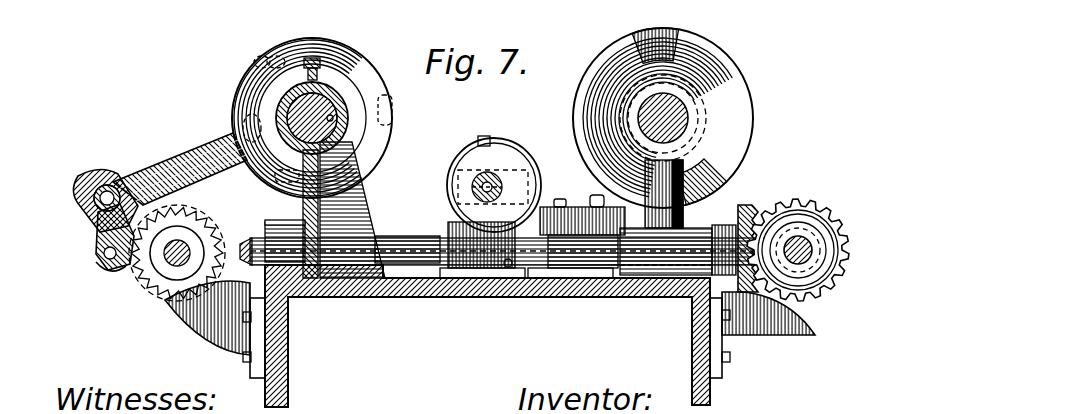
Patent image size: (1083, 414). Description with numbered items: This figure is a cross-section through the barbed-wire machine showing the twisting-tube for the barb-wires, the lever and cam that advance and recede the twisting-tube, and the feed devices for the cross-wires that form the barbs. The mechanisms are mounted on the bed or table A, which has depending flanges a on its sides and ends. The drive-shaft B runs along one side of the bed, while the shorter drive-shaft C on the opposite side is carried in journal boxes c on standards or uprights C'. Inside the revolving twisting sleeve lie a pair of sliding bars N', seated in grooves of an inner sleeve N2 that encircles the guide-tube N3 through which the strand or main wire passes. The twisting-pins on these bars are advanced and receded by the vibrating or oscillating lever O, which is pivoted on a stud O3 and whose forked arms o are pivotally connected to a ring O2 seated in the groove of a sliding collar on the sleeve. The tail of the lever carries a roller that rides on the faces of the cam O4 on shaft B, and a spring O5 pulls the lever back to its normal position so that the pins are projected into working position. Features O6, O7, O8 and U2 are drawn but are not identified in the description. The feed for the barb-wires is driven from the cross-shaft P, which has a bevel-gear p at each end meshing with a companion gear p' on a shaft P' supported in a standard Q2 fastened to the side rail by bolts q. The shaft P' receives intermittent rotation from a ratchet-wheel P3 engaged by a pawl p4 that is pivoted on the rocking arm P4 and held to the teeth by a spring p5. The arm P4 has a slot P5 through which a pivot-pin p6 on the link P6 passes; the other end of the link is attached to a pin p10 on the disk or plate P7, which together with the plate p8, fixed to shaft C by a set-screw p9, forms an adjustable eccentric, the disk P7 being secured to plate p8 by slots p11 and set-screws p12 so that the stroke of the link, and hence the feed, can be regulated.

The bed or table A is at (496, 268).
The depending flanges a is at (487, 376).
The drive-shaft B is at (670, 110).
The drive-shaft C is at (313, 110).
The journal bearings or boxes c is at (345, 108).
The standards or uprights C' is at (351, 210).
The cross-shaft P is at (407, 234).
The shaft P' is at (149, 279).
The ratchet-wheel P3 is at (186, 292).
The rocking arm P4 is at (108, 224).
The slot P5 is at (106, 186).
The link P6 is at (135, 180).
The disk or plate P7 is at (240, 92).
The bevel-gear p is at (746, 227).
The companion gear p' is at (798, 230).
The pawl p4 is at (106, 256).
The spring p5 is at (124, 262).
The pivot-pin p6 is at (110, 196).
The disk or plate p8 is at (367, 85).
The set-screw p9 is at (320, 70).
The pin or pivot p10 is at (246, 132).
The slots p11 is at (282, 56).
The set-screws p12 is at (270, 58).
The standard or upright Q2 is at (240, 335).
The bolts q is at (248, 346).
The support U2 is at (462, 236).
The sliding bars N' is at (498, 155).
The sleeve N2 is at (507, 177).
The guide-tube N3 is at (506, 182).
The vibrating or oscillating lever O is at (612, 172).
The arms o is at (510, 268).
The ring O2 is at (530, 138).
The stud O3 is at (568, 318).
The cam O4 is at (682, 116).
The spring O5 is at (612, 64).
The cam sectors O6 is at (660, 31).
The shaft O7 is at (670, 188).
The groove O8 is at (652, 148).